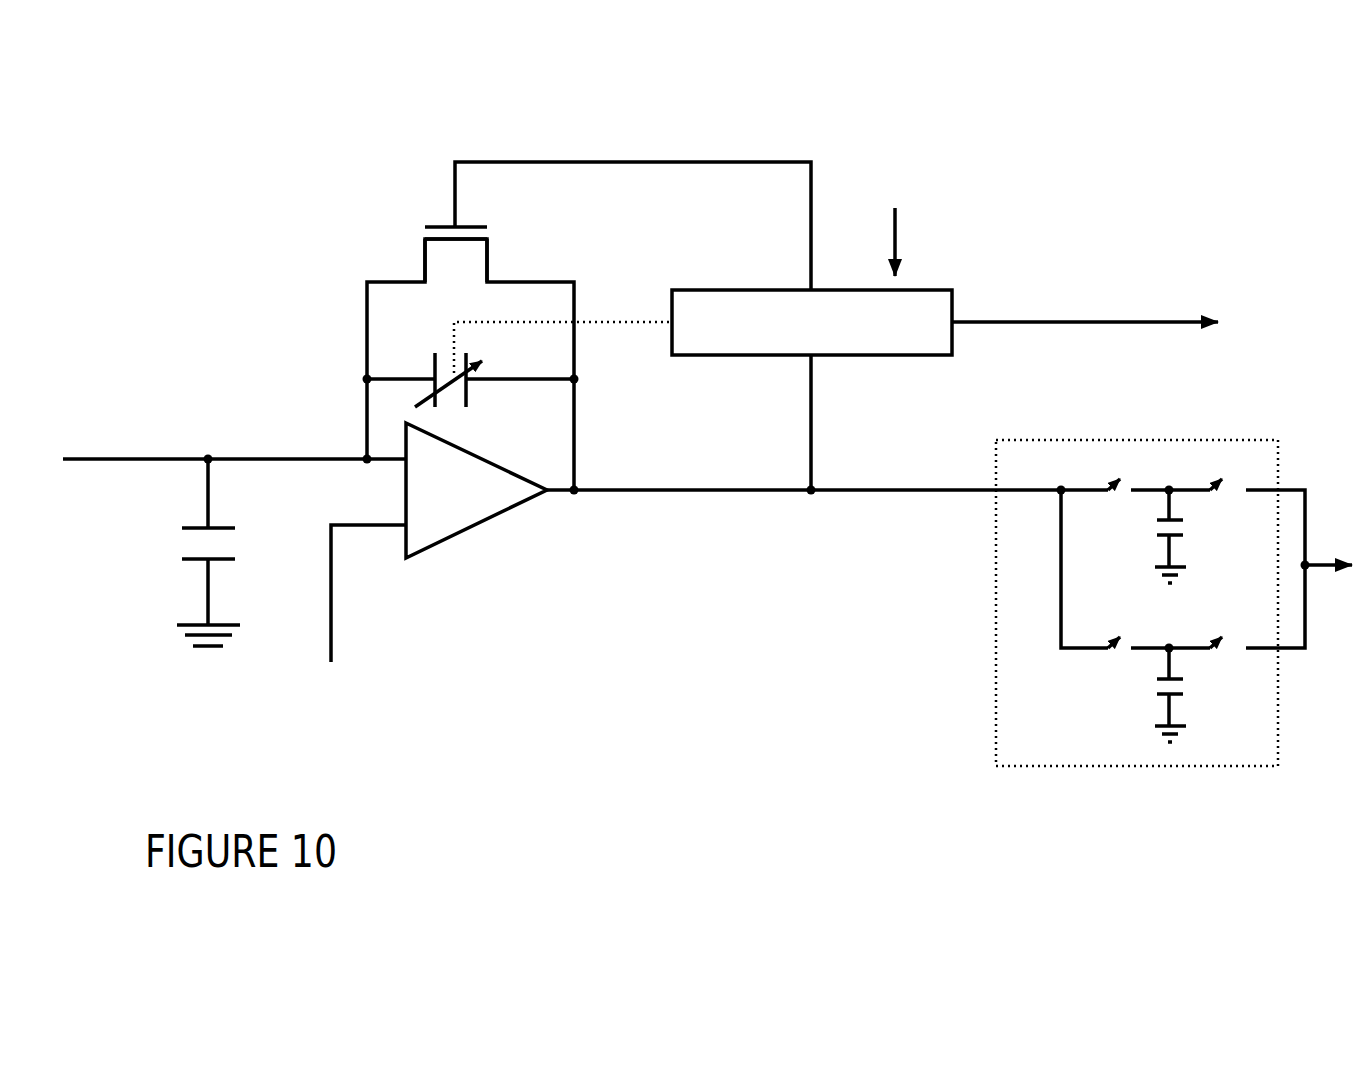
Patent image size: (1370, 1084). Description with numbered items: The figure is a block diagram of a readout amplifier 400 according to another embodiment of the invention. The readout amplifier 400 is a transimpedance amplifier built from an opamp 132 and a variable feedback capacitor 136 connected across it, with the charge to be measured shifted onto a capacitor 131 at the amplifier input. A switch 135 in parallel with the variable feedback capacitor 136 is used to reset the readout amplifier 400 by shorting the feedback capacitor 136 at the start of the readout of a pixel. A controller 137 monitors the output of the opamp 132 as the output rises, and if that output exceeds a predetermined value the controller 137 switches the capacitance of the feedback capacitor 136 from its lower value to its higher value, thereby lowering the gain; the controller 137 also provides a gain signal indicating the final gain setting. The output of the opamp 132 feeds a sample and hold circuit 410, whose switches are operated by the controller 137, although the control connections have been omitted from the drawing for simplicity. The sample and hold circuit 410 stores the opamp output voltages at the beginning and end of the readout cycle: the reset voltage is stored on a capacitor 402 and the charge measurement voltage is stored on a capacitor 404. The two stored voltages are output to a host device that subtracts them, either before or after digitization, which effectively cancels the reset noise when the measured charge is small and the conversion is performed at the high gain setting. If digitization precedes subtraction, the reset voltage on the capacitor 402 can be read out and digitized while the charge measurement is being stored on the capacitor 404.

The readout amplifier 400 is at (205, 181).
The capacitor 131 is at (225, 560).
The opamp 132 is at (476, 525).
The switch 135 is at (425, 239).
The variable feedback capacitor 136 is at (435, 365).
The controller 137 is at (712, 355).
The capacitor 402 is at (1160, 520).
The capacitor 404 is at (1160, 679).
The sample and hold circuit 410 is at (996, 618).